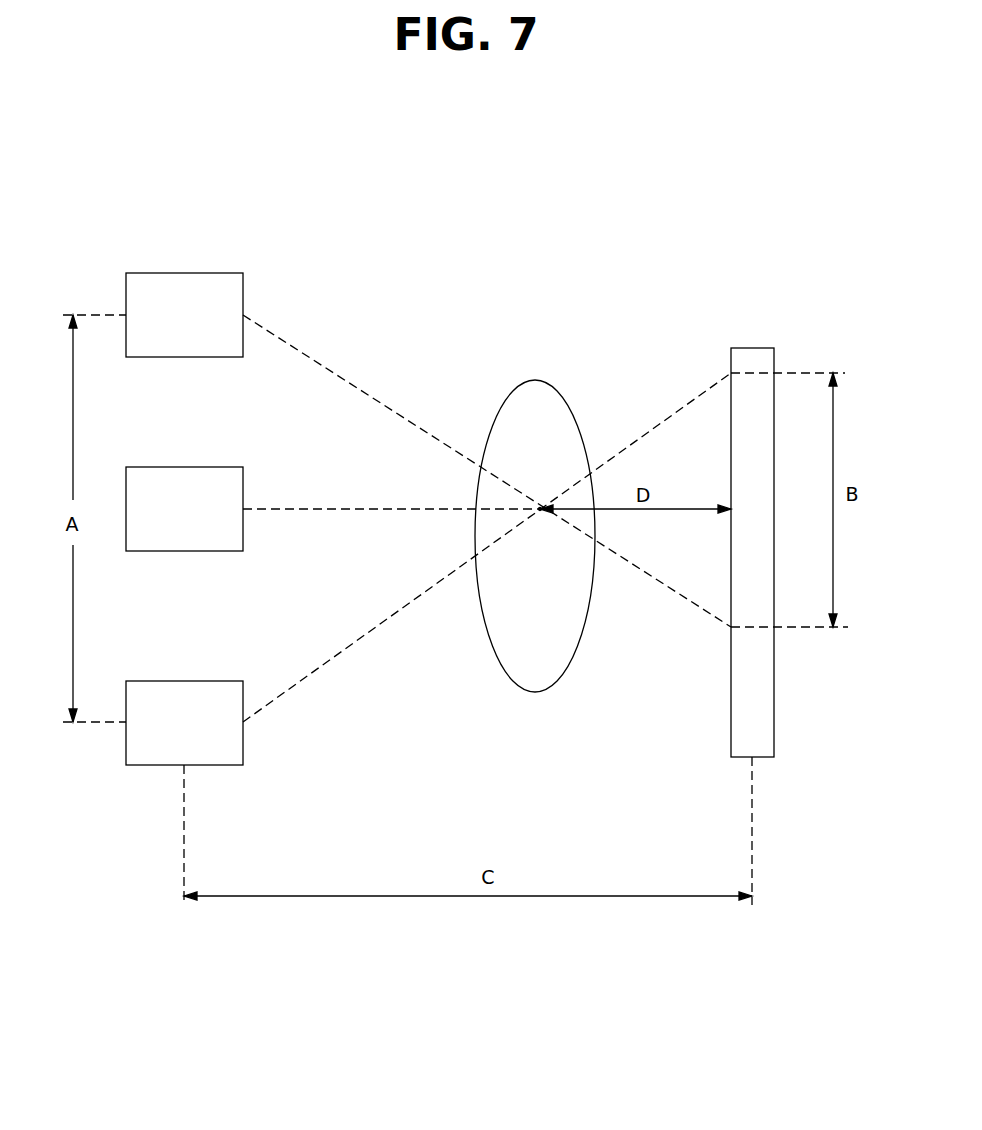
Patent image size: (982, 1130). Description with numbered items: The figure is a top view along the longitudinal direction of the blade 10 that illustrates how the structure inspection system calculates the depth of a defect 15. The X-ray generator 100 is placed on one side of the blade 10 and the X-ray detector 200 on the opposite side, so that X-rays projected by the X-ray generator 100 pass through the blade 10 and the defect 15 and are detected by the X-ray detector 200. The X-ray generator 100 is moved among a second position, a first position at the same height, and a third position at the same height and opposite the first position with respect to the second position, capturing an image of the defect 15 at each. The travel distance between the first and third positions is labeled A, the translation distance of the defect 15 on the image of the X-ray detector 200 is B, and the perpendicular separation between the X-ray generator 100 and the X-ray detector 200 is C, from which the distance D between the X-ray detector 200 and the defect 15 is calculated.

The X-ray generator 100 is at (212, 273).
The blade 10 is at (567, 397).
The defect 15 is at (540, 512).
The X-ray detector 200 is at (757, 348).